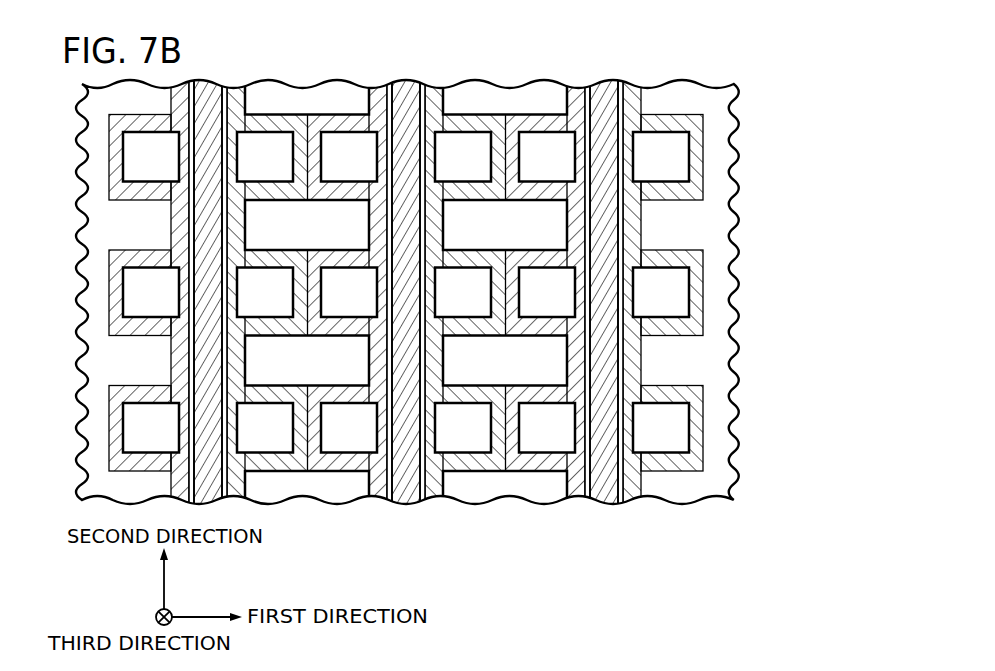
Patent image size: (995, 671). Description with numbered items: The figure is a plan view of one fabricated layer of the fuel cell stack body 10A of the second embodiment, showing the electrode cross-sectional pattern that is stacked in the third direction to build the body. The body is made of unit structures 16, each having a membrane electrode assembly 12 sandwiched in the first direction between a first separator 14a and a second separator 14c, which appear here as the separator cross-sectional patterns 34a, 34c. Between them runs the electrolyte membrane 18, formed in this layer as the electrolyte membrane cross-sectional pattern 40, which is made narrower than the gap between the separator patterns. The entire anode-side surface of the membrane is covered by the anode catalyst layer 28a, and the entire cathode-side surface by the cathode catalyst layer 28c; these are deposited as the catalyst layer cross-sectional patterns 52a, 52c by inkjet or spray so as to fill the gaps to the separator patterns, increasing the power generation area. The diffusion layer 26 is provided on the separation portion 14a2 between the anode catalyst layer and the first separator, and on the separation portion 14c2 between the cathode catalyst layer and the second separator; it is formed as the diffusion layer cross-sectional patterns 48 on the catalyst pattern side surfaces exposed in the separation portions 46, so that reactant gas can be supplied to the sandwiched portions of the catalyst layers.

The fuel cell stack body 10A is at (462, 290).
The membrane electrode assembly 12 is at (518, 260).
The first separator 14a is at (545, 290).
The separator cross-sectional pattern 34a is at (697, 422).
The second separator 14c is at (338, 316).
The separator cross-sectional pattern 34c is at (542, 465).
The separation portion 14a2 is at (665, 165).
The separation portion 14c2 is at (538, 145).
The separation portions 46 is at (509, 277).
The unit structure 16 is at (690, 522).
The electrolyte membrane 18 is at (425, 274).
The electrolyte membrane cross-sectional pattern 40 is at (605, 92).
The diffusion layer 26 is at (477, 293).
The diffusion layer cross-sectional patterns 48 is at (644, 168).
The anode catalyst layer 28a is at (535, 290).
The catalyst layer cross-sectional pattern 52a is at (623, 146).
The cathode catalyst layer 28c is at (389, 260).
The catalyst layer cross-sectional pattern 52c is at (576, 88).